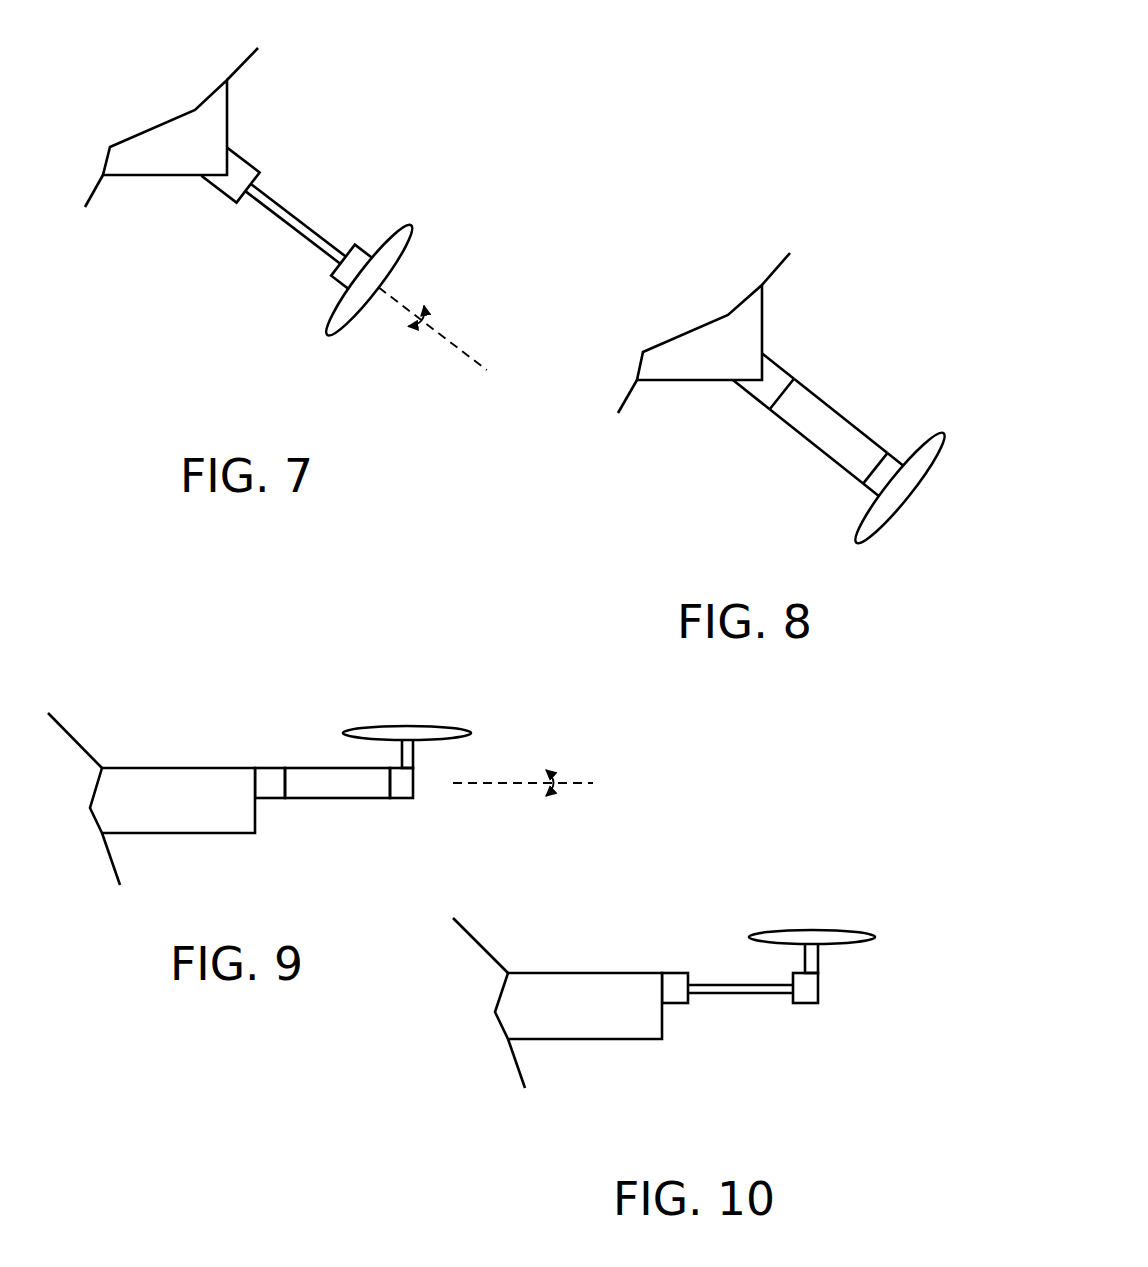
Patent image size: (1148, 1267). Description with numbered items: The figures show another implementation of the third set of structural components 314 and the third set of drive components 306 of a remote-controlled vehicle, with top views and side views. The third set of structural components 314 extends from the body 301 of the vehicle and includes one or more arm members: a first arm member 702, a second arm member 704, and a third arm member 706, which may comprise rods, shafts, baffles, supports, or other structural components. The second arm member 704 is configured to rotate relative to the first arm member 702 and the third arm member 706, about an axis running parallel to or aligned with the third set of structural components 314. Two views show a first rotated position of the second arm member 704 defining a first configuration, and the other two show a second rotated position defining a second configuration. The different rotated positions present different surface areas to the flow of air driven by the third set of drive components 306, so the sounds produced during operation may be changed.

In FIG. 7, the body 301 is at (191, 165).
In FIG. 8, the body 301 is at (723, 373).
In FIG. 9, the body 301 is at (197, 810).
In FIG. 10, the body 301 is at (603, 1018).
In FIG. 7, the third set of structural components 314 is at (345, 258).
In FIG. 8, the third set of structural components 314 is at (819, 433).
In FIG. 9, the third set of structural components 314 is at (404, 778).
In FIG. 10, the third set of structural components 314 is at (752, 982).
In FIG. 7, the first arm member 702 is at (224, 199).
In FIG. 8, the first arm member 702 is at (750, 403).
In FIG. 9, the first arm member 702 is at (280, 800).
In FIG. 10, the first arm member 702 is at (687, 1003).
In FIG. 7, the second arm member 704 is at (293, 233).
In FIG. 8, the second arm member 704 is at (817, 440).
In FIG. 9, the second arm member 704 is at (337, 800).
In FIG. 10, the second arm member 704 is at (750, 993).
In FIG. 7, the third arm member 706 is at (357, 248).
In FIG. 8, the third arm member 706 is at (893, 460).
In FIG. 9, the third arm member 706 is at (407, 800).
In FIG. 10, the third arm member 706 is at (813, 1003).
In FIG. 7, the third set of drive components 306 is at (378, 342).
In FIG. 8, the third set of drive components 306 is at (938, 519).
In FIG. 9, the third set of drive components 306 is at (436, 803).
In FIG. 10, the third set of drive components 306 is at (858, 979).